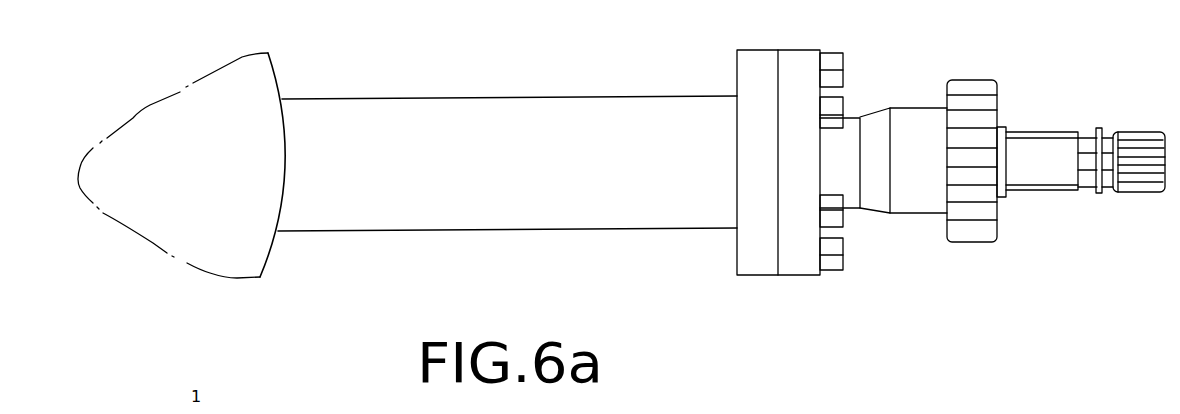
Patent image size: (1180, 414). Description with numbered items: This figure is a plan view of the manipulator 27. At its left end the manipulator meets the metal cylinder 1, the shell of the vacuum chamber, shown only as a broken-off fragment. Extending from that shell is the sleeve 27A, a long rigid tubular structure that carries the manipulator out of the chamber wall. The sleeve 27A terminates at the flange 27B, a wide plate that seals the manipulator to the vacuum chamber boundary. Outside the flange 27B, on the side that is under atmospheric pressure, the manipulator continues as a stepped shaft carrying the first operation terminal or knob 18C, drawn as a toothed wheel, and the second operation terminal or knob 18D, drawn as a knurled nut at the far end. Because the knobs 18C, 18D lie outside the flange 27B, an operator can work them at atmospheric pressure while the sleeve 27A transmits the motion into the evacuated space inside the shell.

The rotor body end 1 is at (263, 90).
The manipulator 27 is at (560, 148).
The sleeve 27A is at (420, 98).
The flange 27B is at (737, 65).
The first operation terminal 18C is at (947, 82).
The second operation terminal 18D is at (1118, 131).